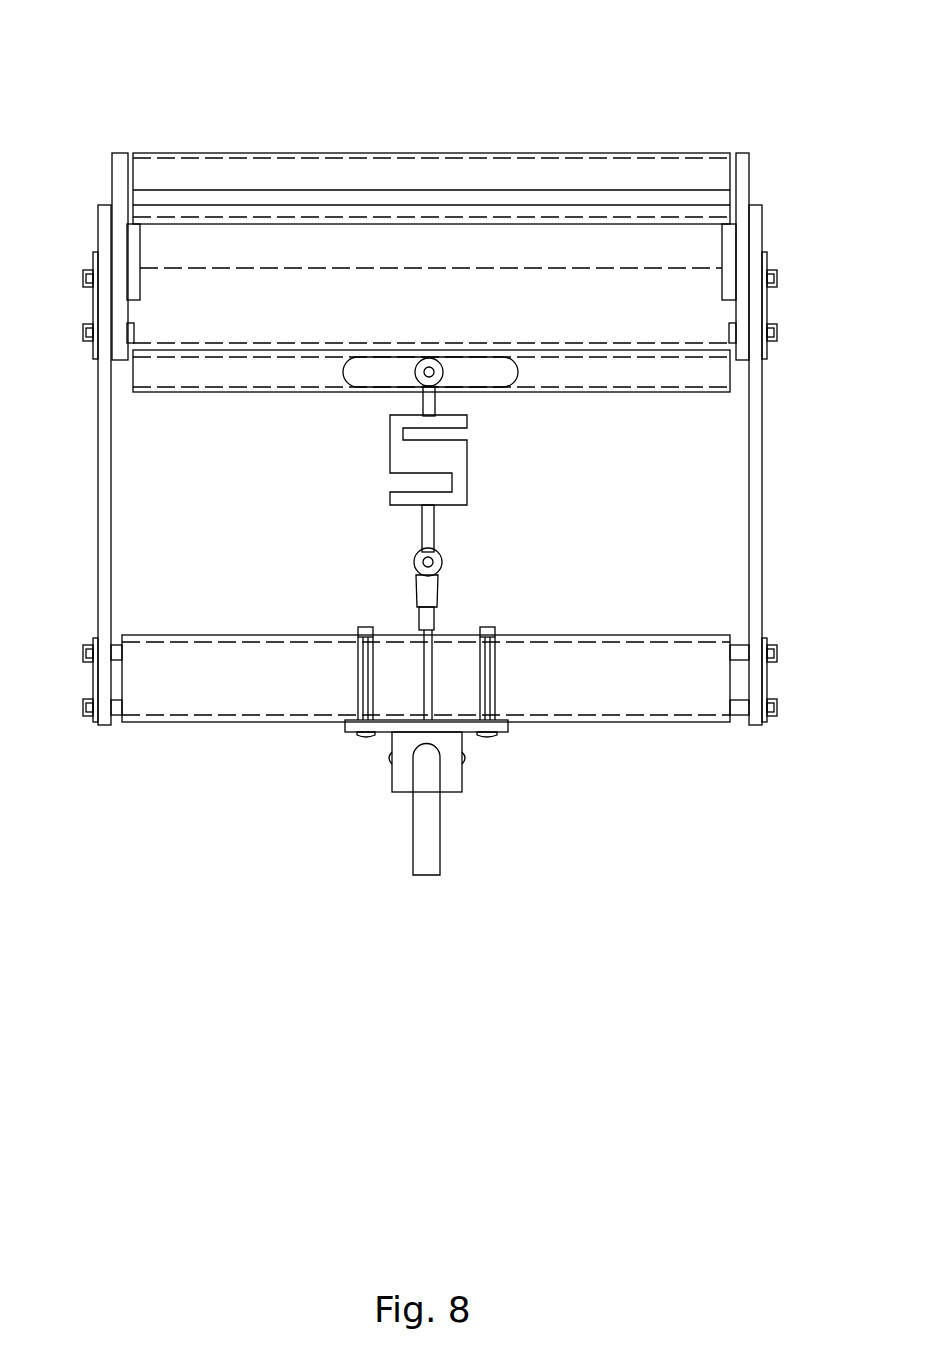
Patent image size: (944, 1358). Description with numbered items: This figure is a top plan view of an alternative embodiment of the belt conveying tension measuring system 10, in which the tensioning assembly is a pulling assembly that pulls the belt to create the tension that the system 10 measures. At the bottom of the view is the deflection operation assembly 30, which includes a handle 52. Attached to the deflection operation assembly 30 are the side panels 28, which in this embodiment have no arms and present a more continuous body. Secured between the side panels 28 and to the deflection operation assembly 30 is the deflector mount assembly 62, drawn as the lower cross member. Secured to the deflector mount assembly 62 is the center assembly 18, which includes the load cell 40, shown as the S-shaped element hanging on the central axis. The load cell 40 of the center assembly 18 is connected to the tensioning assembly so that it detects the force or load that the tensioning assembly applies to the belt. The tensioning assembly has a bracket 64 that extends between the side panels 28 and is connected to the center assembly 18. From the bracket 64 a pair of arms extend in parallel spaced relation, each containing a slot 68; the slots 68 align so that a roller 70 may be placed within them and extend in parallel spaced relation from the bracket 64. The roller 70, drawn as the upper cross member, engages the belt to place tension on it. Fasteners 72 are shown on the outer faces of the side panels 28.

The belt conveying tension measuring system 10 is at (125, 28).
The center assembly 18 is at (360, 447).
The side panels 28 is at (100, 438).
The deflection operation assembly 30 is at (425, 806).
The load cell 40 is at (468, 456).
The handle 52 is at (425, 845).
The deflector mount assembly 62 is at (593, 660).
The bracket 64 is at (555, 376).
The slot 68 is at (118, 176).
The roller 70 is at (460, 170).
The fastener 72 is at (768, 306).